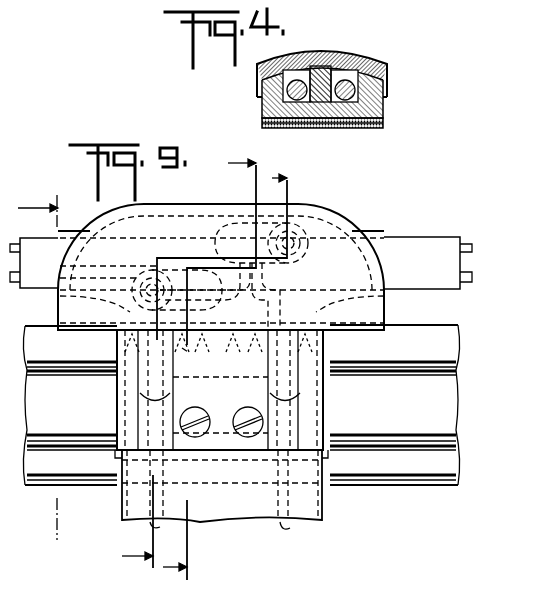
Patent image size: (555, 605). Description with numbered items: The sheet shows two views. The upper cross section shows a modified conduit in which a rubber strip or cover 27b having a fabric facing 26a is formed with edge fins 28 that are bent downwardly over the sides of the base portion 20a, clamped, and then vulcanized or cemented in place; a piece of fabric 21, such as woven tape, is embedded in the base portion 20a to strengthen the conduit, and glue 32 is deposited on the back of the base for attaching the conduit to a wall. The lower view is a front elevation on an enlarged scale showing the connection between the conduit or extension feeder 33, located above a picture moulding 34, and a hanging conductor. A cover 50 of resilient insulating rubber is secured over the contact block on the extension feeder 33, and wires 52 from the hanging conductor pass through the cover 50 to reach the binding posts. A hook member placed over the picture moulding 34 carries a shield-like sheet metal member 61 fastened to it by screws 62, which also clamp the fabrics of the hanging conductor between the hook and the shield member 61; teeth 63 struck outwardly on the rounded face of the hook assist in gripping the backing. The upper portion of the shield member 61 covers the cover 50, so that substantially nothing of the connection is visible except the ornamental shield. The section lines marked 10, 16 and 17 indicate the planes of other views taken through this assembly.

In FIG. 9, the section line 10- 10 is at (40, 372).
In FIG. 9, the section line 16- 16 is at (214, 371).
In FIG. 9, the section line 17- 17 is at (209, 372).
In FIG. 4, the base portion 20a is at (386, 106).
In FIG. 4, the piece of fabric 21 is at (352, 126).
In FIG. 4, the fabric facing 26a is at (322, 52).
In FIG. 4, the cover 27b is at (372, 60).
In FIG. 4, the edge fins 28 is at (258, 88).
In FIG. 4, the glue 32 is at (300, 128).
In FIG. 9, the conduit or extension feeder 33 is at (437, 246).
In FIG. 9, the picture moulding 34 is at (445, 356).
In FIG. 9, the cover 50 is at (348, 252).
In FIG. 9, the wires 52 is at (200, 265).
In FIG. 9, the shield member 61 is at (214, 248).
In FIG. 9, the screws 62 is at (242, 411).
In FIG. 9, the teeth 63 is at (190, 353).